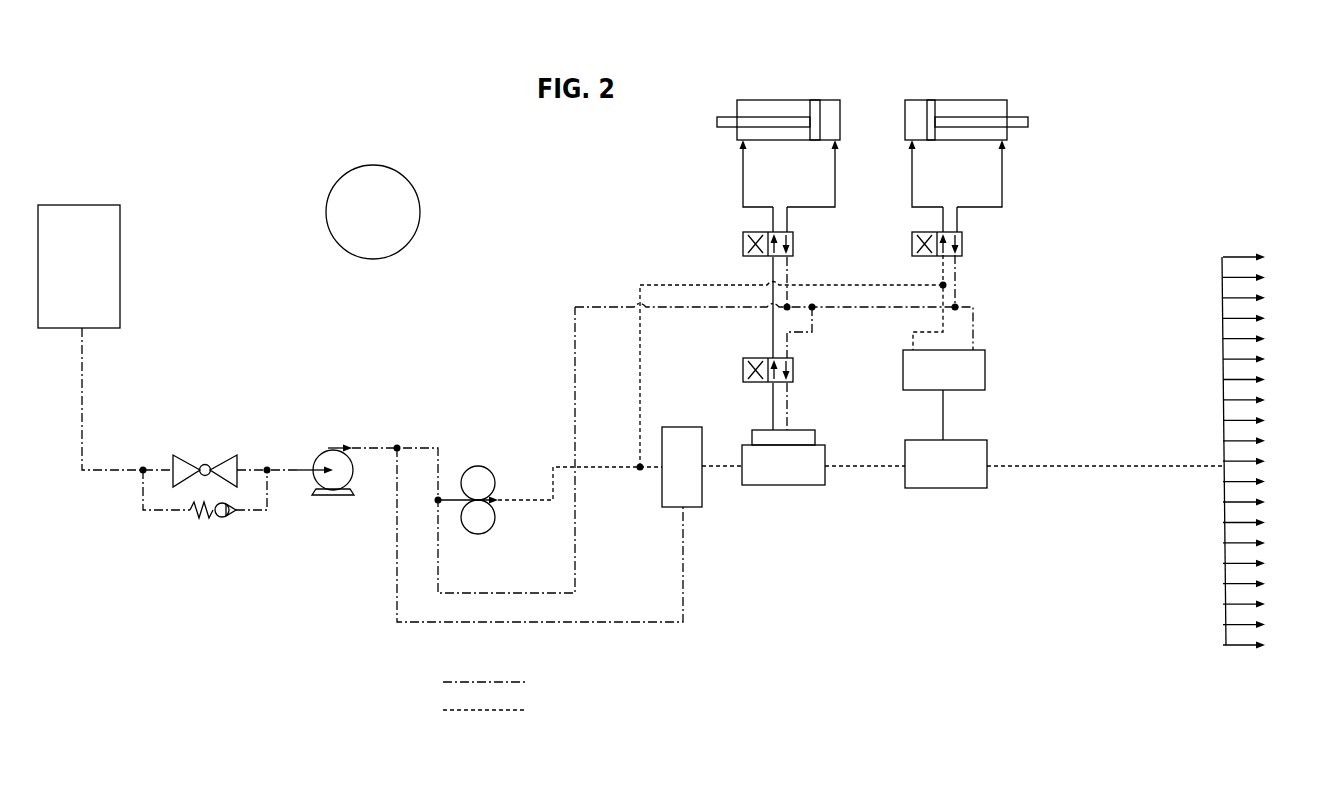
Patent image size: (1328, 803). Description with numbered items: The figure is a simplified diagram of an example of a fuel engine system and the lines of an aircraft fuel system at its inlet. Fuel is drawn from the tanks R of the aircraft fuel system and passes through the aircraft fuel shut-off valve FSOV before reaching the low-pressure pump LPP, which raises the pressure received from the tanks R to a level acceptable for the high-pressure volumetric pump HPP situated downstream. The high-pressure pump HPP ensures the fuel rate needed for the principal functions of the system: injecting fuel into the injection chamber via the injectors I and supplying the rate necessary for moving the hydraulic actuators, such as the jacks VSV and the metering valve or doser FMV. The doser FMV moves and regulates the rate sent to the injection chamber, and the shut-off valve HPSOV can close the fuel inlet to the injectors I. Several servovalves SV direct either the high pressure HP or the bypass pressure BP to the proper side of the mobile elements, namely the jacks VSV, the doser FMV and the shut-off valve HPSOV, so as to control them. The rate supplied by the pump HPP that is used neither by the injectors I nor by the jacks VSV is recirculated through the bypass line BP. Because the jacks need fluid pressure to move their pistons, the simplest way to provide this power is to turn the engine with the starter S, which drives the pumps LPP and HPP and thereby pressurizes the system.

The tank R is at (131, 262).
The aircraft fuel shut-off valve FSOV is at (206, 448).
The low-pressure pump LPP is at (312, 444).
The high-pressure volumetric pump HPP is at (466, 462).
The servovalve SV is at (538, 455).
The jack VSV is at (789, 89).
The metering valve (doser) FMV is at (784, 496).
The shut-off valve HPSOV is at (947, 497).
The injectors I is at (1292, 330).
The starter S is at (373, 212).
The bypass valve BP is at (502, 682).
The high pressure HP is at (503, 710).